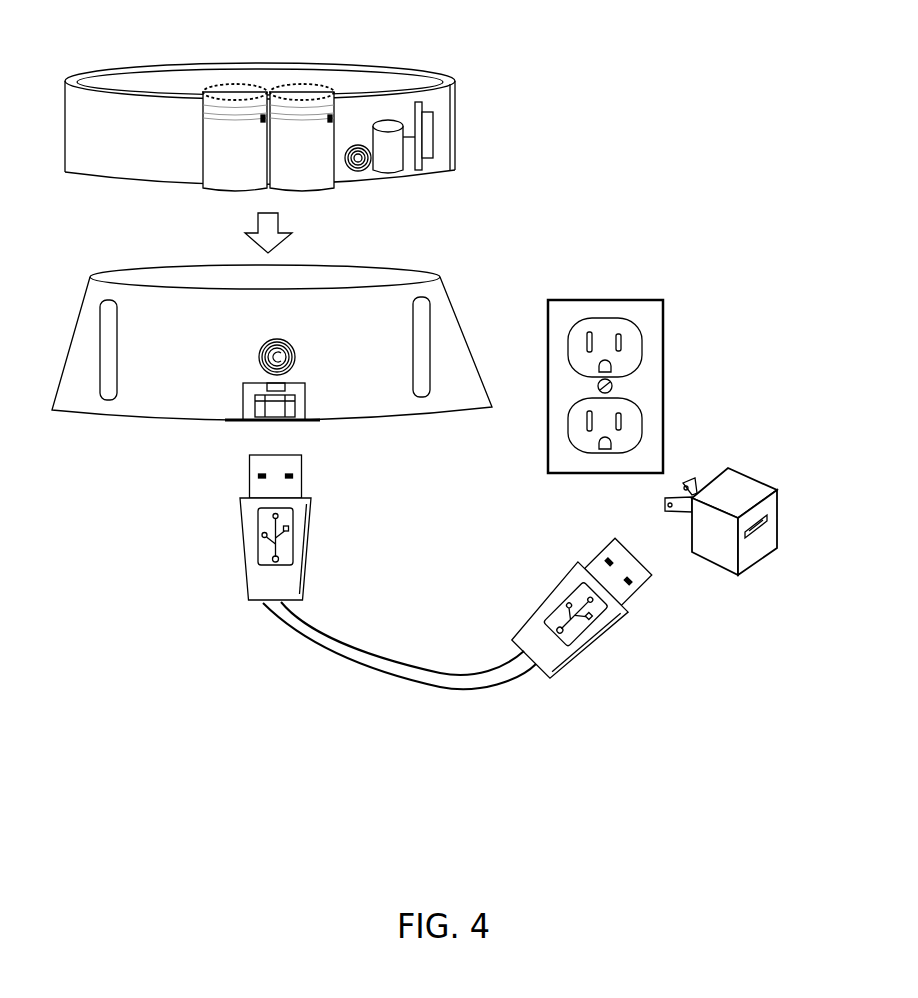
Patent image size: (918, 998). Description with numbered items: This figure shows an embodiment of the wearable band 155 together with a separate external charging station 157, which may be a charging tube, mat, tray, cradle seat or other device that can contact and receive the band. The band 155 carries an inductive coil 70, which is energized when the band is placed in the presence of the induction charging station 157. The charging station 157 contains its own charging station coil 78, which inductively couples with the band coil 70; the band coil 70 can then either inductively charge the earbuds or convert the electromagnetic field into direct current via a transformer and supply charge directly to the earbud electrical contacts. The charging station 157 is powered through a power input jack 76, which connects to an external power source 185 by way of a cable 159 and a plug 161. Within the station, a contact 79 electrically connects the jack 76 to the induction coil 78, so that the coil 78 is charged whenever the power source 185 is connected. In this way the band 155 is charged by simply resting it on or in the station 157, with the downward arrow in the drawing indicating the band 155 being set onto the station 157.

The band 155 is at (95, 82).
The inductive coil 70 is at (362, 168).
The charging station 157 is at (78, 303).
The charging station coil 78 is at (262, 365).
The contact 79 is at (283, 383).
The power input jack 76 is at (265, 420).
The cable 159 is at (330, 653).
The external power source 185 is at (655, 298).
The plug 161 is at (760, 565).